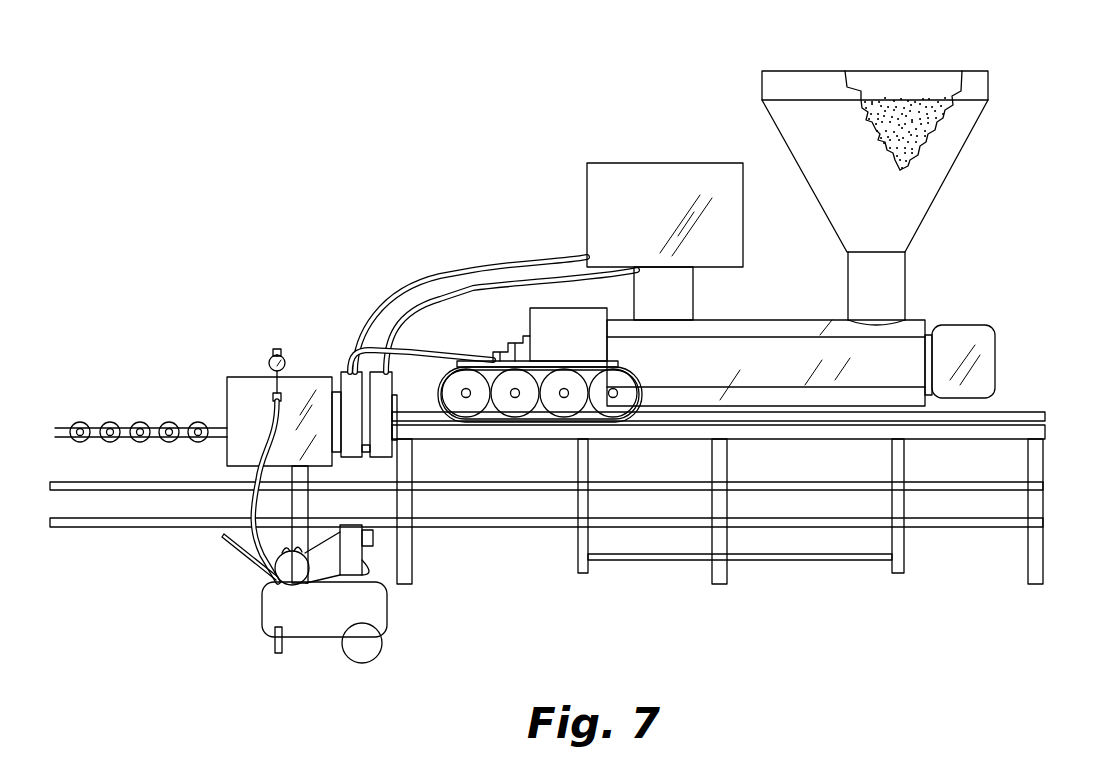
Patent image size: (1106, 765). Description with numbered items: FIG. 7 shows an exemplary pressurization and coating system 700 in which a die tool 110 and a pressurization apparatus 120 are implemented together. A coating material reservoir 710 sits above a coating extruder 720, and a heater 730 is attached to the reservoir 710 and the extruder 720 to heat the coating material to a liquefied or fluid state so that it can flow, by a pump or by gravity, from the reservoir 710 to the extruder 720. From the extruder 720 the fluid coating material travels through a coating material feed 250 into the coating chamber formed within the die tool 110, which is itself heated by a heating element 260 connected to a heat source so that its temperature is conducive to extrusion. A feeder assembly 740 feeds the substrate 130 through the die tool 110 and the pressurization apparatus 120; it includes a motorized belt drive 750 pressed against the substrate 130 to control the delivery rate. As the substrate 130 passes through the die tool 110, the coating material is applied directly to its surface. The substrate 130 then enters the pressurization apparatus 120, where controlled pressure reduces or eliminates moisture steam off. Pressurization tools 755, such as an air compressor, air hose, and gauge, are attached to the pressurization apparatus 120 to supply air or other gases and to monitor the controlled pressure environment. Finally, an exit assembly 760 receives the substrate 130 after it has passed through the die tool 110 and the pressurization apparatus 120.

The pressurization and coating system 700 is at (261, 215).
The coating material reservoir 710 is at (787, 72).
The coating extruder 720 is at (818, 320).
The heater 730 is at (667, 163).
The feeder assembly 740 is at (555, 485).
The motorized belt drive 750 is at (468, 408).
The exit assembly 760 is at (215, 523).
The pressurization tools 755 is at (272, 340).
The die tool 110 is at (331, 370).
The pressurization apparatus 120 is at (256, 380).
The substrate 130 is at (1017, 410).
The coating material feed 250 is at (434, 355).
The heating element 260 is at (472, 268).